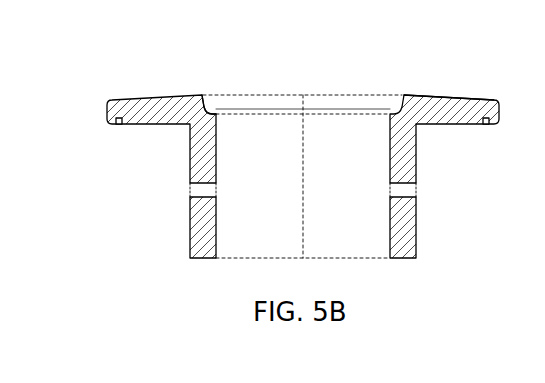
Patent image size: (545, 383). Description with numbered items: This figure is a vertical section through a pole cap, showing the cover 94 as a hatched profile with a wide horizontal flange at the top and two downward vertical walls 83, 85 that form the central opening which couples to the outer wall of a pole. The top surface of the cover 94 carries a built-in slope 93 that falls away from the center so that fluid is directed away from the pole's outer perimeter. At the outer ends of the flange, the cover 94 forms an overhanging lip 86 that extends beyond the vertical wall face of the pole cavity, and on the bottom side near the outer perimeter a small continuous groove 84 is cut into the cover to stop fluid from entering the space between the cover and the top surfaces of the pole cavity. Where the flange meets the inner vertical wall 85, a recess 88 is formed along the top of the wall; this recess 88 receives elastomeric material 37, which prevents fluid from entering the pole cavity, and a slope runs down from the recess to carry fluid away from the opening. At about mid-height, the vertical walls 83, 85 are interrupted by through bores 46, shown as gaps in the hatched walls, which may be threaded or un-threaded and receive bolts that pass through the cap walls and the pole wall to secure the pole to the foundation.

The elastomeric material 37 is at (212, 78).
The recess 88 is at (208, 109).
The cap inner vertical wall 85 is at (390, 127).
The built-in slope 93 is at (449, 71).
The cover 94 is at (450, 97).
The continuous groove 84 is at (118, 124).
The overhanging lip 86 is at (481, 125).
The vertical wall 83 is at (190, 230).
The through bores 46 is at (416, 192).